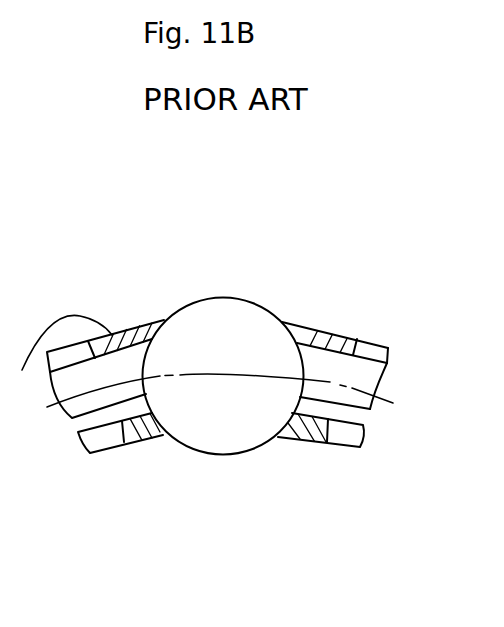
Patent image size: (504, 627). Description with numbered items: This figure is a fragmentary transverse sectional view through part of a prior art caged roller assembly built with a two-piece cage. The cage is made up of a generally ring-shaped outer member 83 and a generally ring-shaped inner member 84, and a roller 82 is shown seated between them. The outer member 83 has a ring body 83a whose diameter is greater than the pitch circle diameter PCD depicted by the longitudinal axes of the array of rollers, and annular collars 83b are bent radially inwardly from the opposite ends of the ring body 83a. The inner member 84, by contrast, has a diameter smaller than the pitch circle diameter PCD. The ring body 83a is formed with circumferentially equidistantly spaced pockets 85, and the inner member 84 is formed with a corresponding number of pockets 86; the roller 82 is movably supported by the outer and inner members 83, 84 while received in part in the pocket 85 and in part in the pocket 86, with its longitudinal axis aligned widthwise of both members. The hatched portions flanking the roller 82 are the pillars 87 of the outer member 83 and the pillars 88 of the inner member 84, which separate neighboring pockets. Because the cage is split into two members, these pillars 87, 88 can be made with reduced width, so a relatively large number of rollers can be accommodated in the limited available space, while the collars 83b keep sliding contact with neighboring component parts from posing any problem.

The roller 82 is at (228, 311).
The outer member 83 is at (194, 362).
The ring body 83a is at (377, 341).
The annular collar 83b is at (375, 412).
The inner member 84 is at (135, 437).
The pocket 85 is at (145, 322).
The pocket 86 is at (188, 443).
The pillar 87 is at (328, 327).
The pillar 88 is at (309, 433).
The pitch circle diameter PCD is at (203, 374).